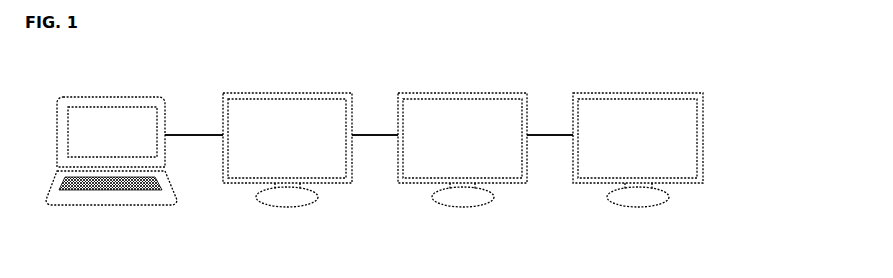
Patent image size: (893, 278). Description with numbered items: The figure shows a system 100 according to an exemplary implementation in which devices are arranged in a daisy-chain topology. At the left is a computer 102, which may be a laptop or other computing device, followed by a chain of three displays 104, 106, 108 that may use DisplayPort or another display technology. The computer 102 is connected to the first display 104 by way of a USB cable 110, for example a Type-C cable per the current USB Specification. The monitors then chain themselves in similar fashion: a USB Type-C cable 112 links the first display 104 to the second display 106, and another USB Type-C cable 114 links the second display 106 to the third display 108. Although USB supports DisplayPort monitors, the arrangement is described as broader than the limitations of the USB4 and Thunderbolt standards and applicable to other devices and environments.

The system 100 is at (742, 225).
The computer 102 is at (111, 151).
The display 104 is at (287, 150).
The display 106 is at (462, 150).
The display 108 is at (638, 150).
The USB cable 110 is at (192, 135).
The USB Type-C cable 112 is at (367, 135).
The USB Type-C cable 114 is at (542, 135).